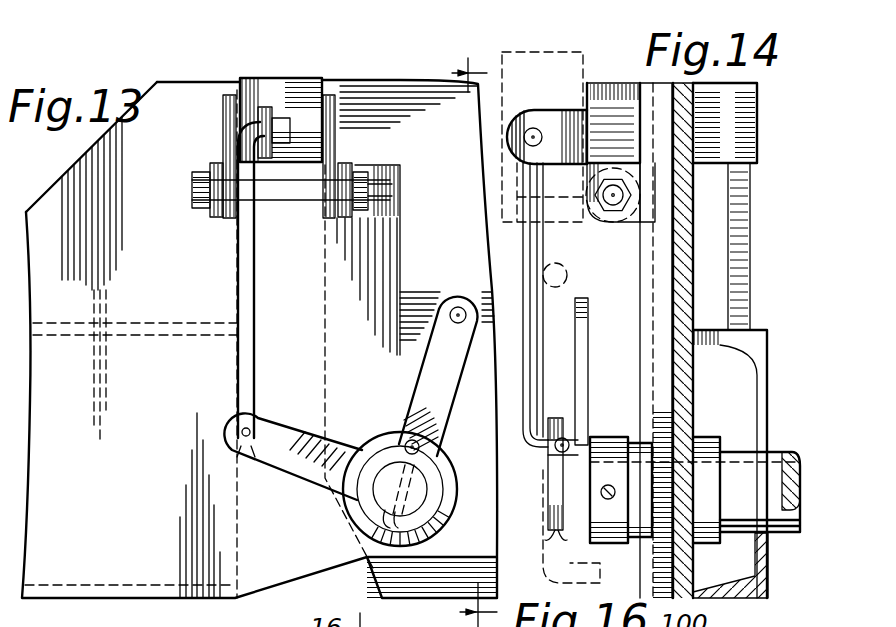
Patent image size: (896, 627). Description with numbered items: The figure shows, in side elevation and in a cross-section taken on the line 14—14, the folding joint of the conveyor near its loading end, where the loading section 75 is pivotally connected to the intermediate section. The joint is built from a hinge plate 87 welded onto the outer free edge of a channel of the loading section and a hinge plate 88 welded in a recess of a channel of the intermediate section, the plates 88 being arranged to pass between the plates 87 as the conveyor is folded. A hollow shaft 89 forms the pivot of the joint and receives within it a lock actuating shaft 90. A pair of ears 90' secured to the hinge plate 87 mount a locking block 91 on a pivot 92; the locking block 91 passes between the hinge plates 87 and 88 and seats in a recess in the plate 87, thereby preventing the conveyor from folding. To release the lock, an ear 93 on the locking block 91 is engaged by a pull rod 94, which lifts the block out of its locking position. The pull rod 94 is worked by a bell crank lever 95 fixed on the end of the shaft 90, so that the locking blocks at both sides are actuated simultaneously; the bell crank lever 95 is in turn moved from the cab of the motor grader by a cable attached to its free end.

In FIG. 13, the section line 14— 14 is at (428, 341).
In FIG. 13, the loading section 75 is at (60, 173).
In FIG. 13, the hinge plate 87 is at (142, 272).
In FIG. 14, the hinge plate 87 is at (654, 289).
In FIG. 13, the hinge plate 88 is at (452, 243).
In FIG. 14, the hinge plate 88 is at (697, 228).
In FIG. 13, the hollow shaft 89 is at (437, 465).
In FIG. 14, the hollow shaft 89 is at (745, 430).
In FIG. 13, the lock actuating shaft 90 is at (454, 495).
In FIG. 14, the lock actuating shaft 90 is at (611, 480).
In FIG. 13, the ears 90' is at (289, 174).
In FIG. 14, the ears 90' is at (632, 219).
In FIG. 13, the locking block 91 is at (260, 93).
In FIG. 14, the locking block 91 is at (638, 83).
In FIG. 13, the pivot 92 is at (362, 190).
In FIG. 14, the pivot 92 is at (608, 208).
In FIG. 13, the ear 93 is at (227, 108).
In FIG. 14, the ear 93 is at (570, 109).
In FIG. 13, the pull rod 94 is at (244, 293).
In FIG. 14, the pull rod 94 is at (532, 240).
In FIG. 13, the bell crank lever 95 is at (272, 436).
In FIG. 14, the bell crank lever 95 is at (585, 358).